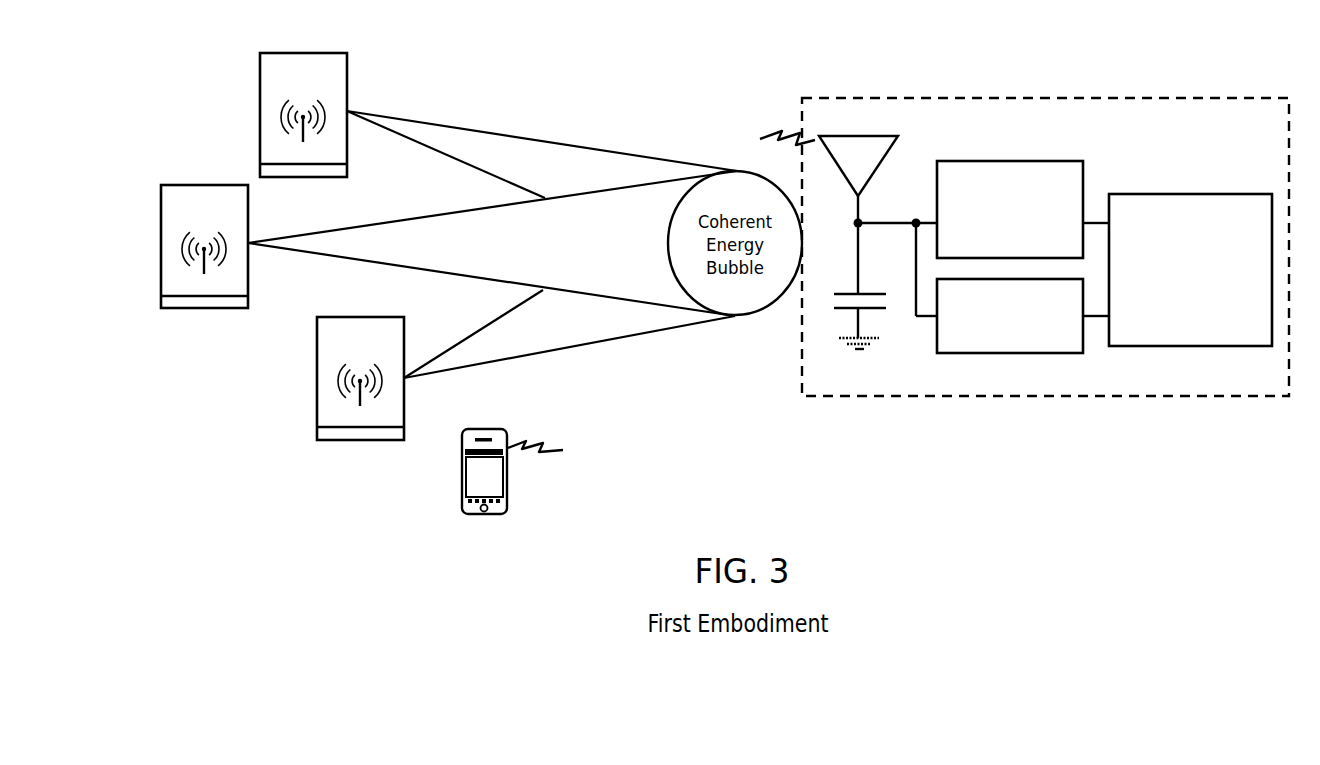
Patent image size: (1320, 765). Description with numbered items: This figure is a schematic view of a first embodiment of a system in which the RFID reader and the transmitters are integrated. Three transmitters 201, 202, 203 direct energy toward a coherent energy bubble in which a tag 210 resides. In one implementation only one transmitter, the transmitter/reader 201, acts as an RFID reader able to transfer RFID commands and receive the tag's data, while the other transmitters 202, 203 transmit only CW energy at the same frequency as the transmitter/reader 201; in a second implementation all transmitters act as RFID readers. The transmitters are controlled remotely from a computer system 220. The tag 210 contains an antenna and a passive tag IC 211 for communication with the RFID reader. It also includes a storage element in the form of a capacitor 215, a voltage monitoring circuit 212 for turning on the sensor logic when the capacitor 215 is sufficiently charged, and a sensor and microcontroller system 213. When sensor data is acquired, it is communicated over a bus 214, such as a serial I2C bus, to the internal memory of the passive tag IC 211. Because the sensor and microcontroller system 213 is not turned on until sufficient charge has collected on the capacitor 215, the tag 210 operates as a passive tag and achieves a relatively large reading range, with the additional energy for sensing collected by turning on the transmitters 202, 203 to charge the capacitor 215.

The transmitter/reader 201 is at (288, 79).
The transmitter 202 is at (189, 212).
The transmitter 203 is at (345, 343).
The tag 210 is at (1244, 141).
The passive tag IC 211 is at (1045, 198).
The voltage monitoring circuit 212 is at (1045, 305).
The sensor and microcontroller system 213 is at (1228, 223).
The bus 214 is at (1101, 223).
The capacitor 215 is at (888, 301).
The computer system 220 is at (509, 506).